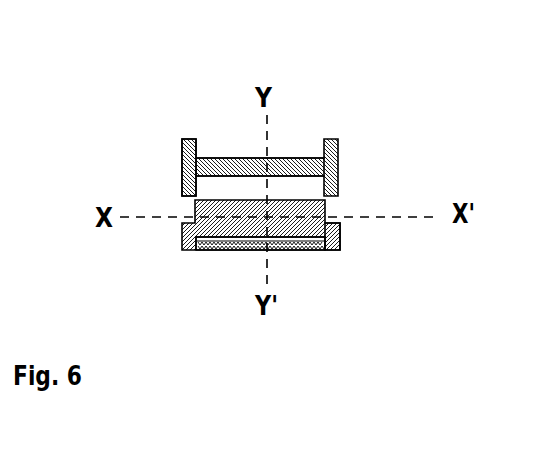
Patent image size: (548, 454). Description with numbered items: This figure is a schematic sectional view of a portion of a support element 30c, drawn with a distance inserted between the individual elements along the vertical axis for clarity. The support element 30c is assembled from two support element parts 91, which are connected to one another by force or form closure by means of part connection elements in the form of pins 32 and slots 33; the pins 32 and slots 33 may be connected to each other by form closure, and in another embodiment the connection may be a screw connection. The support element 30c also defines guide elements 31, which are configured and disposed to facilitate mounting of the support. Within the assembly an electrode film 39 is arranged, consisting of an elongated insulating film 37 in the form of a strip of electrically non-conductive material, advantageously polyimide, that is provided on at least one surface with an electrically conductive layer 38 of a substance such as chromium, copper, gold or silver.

The support element 30c is at (146, 201).
The guide elements 31 is at (188, 139).
The pins 32 is at (338, 178).
The slots 33 is at (326, 208).
The insulating film 37 is at (232, 373).
The electrically conductive layer 38 is at (230, 249).
The electrode film 39 is at (233, 249).
The support element parts 91 is at (228, 163).